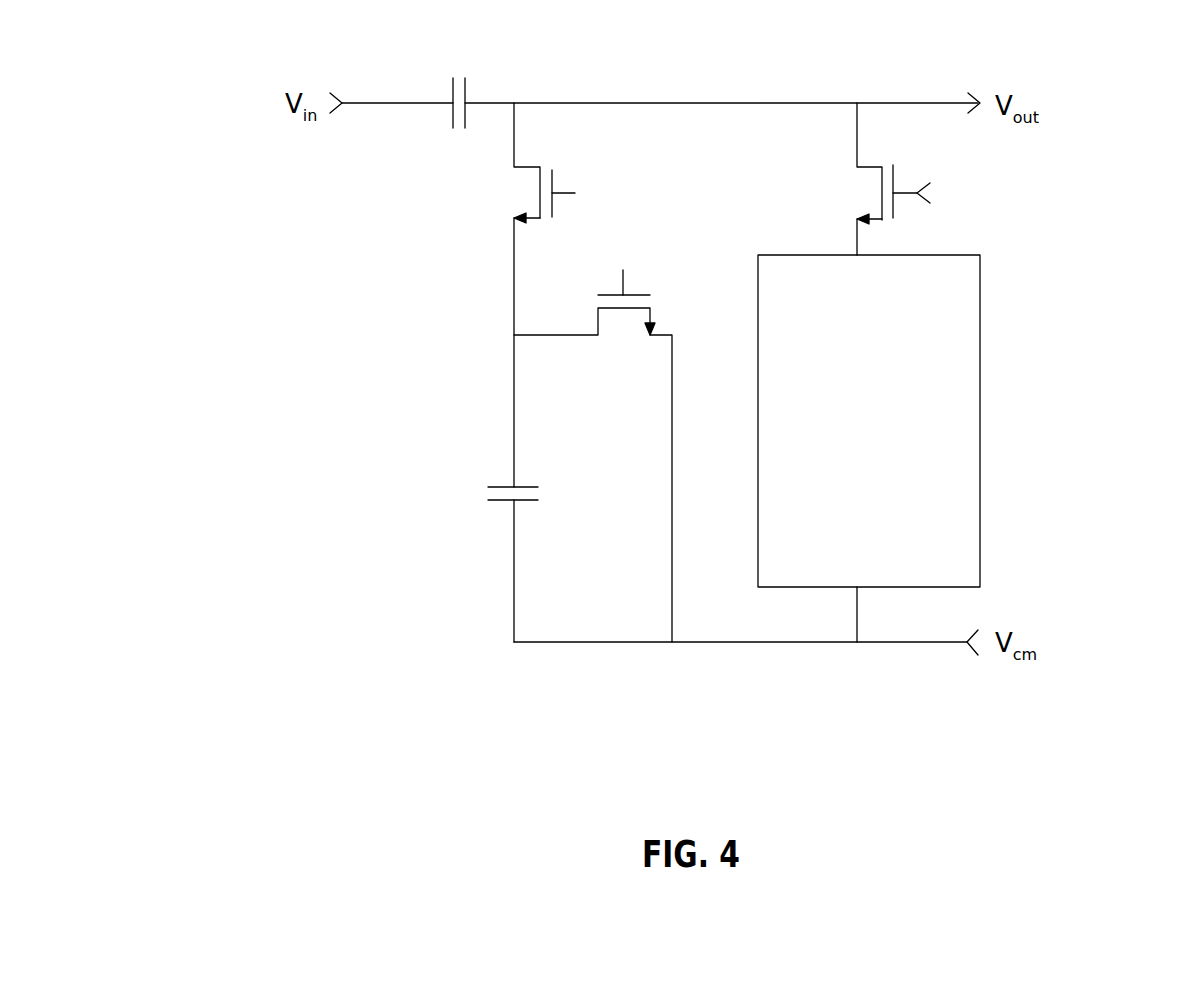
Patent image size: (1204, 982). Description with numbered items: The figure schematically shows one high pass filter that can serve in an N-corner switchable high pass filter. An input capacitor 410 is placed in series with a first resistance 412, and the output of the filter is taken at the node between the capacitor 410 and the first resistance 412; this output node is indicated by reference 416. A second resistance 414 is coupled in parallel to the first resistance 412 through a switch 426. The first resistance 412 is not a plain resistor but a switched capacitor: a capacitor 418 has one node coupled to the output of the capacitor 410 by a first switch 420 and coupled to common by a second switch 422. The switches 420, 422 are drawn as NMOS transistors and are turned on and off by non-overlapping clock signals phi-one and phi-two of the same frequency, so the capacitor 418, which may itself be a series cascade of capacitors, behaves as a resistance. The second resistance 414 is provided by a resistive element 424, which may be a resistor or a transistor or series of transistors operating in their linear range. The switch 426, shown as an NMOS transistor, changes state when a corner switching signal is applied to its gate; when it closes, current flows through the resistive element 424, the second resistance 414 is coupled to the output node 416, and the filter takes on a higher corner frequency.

The capacitor 410 is at (468, 88).
The first resistance 412 is at (430, 372).
The second resistance 414 is at (963, 372).
The output node Vout 416 is at (1094, 102).
The capacitor 418 is at (530, 500).
The first switch 420 is at (537, 192).
The second switch 422 is at (620, 318).
The resistive element 424 is at (892, 467).
The switch 426 is at (877, 191).